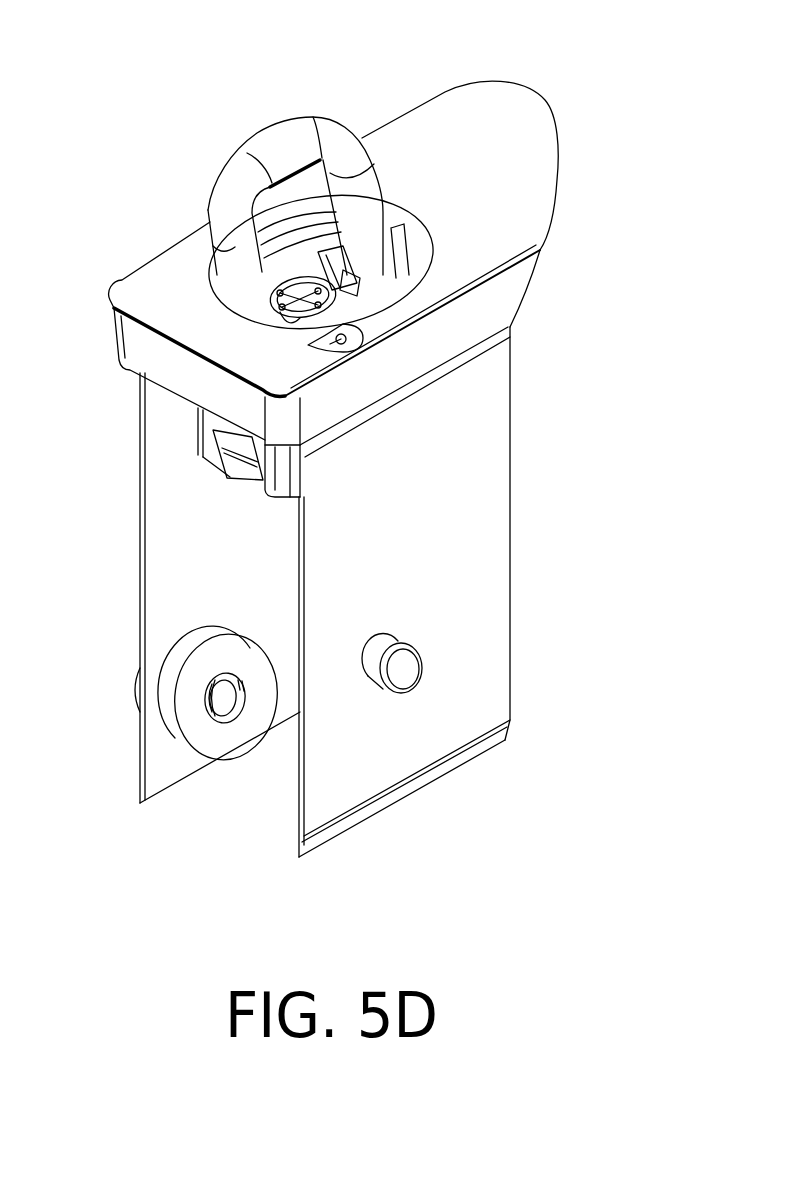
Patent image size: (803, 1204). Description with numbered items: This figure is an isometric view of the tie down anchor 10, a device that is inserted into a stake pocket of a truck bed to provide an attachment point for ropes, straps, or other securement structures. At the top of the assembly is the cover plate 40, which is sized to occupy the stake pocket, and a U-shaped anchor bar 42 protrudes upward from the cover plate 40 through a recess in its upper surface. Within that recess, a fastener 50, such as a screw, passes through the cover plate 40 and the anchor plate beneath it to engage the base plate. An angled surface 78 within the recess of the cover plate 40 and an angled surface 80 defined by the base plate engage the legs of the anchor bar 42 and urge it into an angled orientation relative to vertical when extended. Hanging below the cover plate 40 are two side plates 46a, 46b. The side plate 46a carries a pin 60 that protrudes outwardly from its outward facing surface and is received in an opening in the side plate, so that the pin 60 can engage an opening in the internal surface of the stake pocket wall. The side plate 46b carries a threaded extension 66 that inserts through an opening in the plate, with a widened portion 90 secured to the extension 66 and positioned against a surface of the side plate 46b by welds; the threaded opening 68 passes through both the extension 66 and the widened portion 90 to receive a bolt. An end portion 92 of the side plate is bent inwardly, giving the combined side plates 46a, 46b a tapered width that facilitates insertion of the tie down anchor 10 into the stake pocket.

The tie down anchor 10 is at (244, 96).
The cover plate 40 is at (531, 200).
The anchor bar 42 is at (216, 247).
The side plate 46a is at (422, 552).
The side plate 46b is at (244, 584).
The fastener 50 is at (345, 323).
The pin 60 is at (407, 672).
The threaded extension 66 is at (138, 690).
The threaded opening 68 is at (228, 722).
The angled surface 78 is at (345, 258).
The angled surface 80 is at (240, 444).
The widened portion 90 is at (174, 709).
The end portion 92 is at (300, 847).